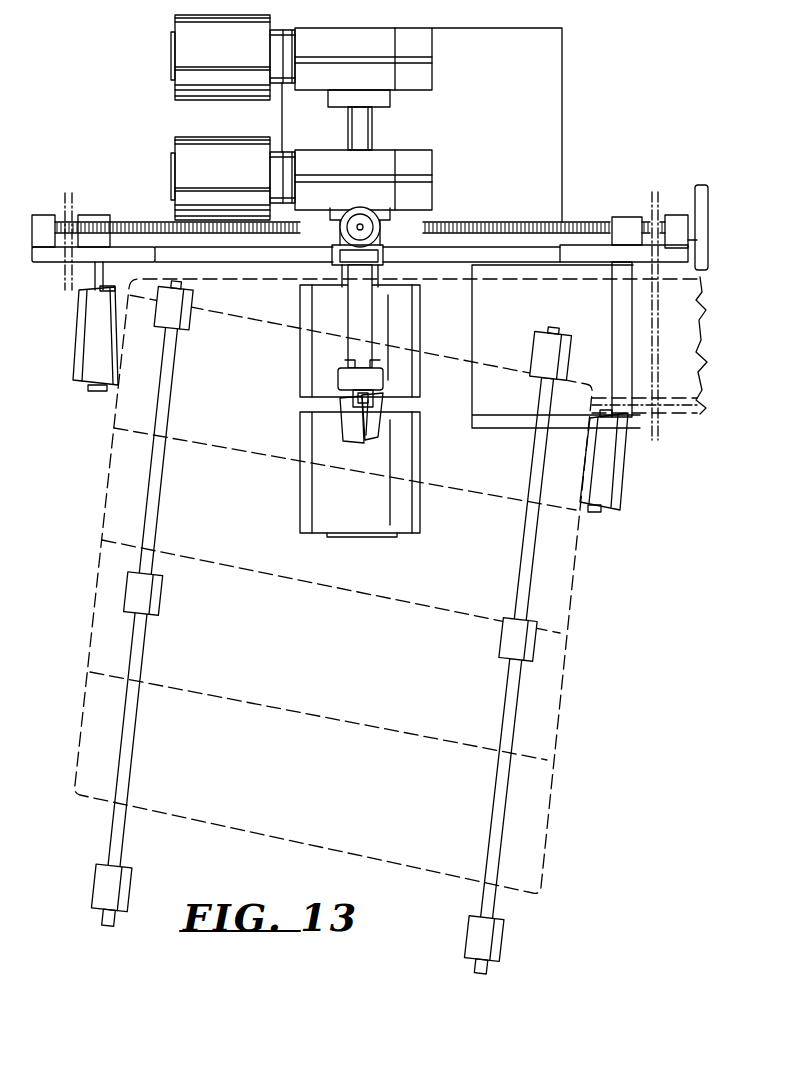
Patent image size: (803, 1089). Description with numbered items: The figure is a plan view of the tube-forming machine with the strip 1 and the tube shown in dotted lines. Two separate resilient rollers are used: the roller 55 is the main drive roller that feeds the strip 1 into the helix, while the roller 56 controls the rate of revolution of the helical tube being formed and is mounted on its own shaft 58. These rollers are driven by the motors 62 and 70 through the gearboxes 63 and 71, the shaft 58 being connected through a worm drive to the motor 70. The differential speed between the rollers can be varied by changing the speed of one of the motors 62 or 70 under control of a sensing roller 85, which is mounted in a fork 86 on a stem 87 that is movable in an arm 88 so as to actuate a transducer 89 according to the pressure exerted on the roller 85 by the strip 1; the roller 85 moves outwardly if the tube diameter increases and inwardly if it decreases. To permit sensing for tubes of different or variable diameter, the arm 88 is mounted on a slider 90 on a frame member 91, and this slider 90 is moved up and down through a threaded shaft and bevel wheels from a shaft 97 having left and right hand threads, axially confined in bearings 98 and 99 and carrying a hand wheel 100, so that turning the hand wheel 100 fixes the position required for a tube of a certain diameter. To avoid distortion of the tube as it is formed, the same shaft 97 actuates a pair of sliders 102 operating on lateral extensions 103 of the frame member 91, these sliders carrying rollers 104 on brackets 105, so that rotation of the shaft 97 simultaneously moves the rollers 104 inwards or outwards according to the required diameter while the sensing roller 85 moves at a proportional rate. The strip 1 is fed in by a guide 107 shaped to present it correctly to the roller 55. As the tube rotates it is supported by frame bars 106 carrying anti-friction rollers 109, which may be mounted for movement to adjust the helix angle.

The strip 1 is at (690, 320).
The roller 55 is at (328, 348).
The roller 56 is at (320, 495).
The shaft 58 is at (363, 132).
The motor 62 is at (188, 147).
The gearbox 63 is at (425, 160).
The motor 70 is at (190, 42).
The housing 71 is at (423, 43).
The sensing roller 85 is at (340, 428).
The fork 86 is at (348, 438).
The stem 87 is at (362, 400).
The arm 88 is at (360, 310).
The transducer 89 is at (362, 380).
The slider 90 is at (333, 258).
The frame member 91 is at (368, 258).
The shaft 97 is at (585, 228).
The bearing 98 is at (47, 215).
The bearing 99 is at (678, 227).
The hand wheel 100 is at (705, 185).
The slider 102 is at (123, 252).
The lateral extension 103 is at (521, 257).
The roller 104 is at (98, 370).
The bracket 105 is at (93, 277).
The frame bar 106 is at (143, 660).
The guide 107 is at (512, 405).
The anti-friction roller 109 is at (187, 330).